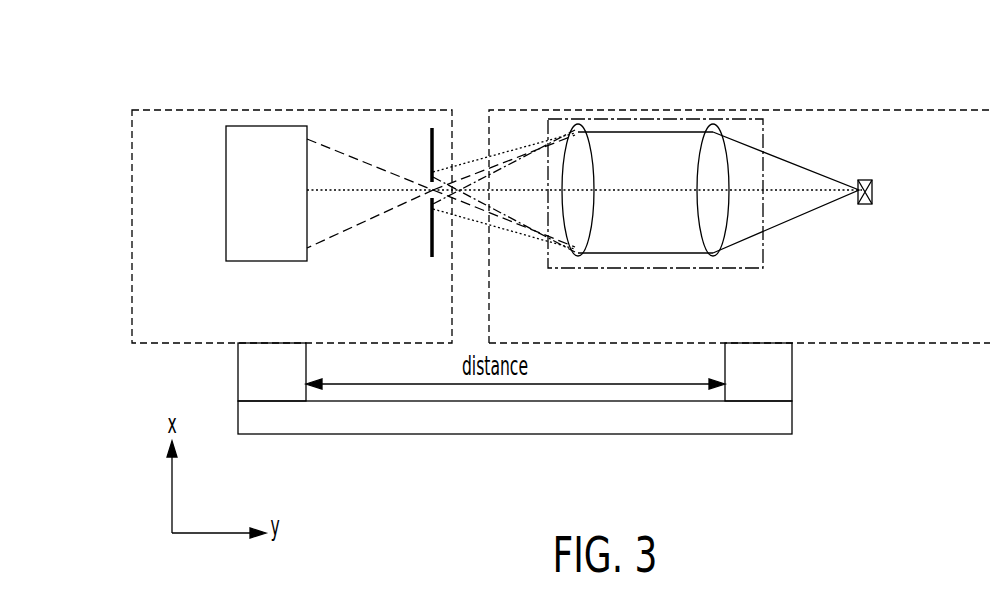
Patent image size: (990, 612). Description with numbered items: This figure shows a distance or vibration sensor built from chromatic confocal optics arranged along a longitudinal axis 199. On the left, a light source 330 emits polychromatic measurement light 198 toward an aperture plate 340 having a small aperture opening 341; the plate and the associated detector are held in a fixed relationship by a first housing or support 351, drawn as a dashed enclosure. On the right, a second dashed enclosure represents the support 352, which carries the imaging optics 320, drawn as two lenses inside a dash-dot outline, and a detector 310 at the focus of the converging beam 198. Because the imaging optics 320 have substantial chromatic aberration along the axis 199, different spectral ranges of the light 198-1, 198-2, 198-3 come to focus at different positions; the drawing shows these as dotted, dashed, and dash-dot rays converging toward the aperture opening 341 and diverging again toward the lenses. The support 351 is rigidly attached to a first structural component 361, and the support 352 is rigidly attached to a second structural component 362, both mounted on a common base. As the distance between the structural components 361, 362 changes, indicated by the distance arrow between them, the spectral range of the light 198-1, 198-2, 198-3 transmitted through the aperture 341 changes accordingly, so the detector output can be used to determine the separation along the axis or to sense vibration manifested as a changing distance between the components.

The polychromatic measurement light 198 is at (792, 163).
The first spectral range of light 198-1 is at (482, 156).
The second spectral range of light 198-2 is at (344, 156).
The third spectral range of light 198-3 is at (528, 232).
The longitudinal axis 199 is at (353, 192).
The detector 310 is at (873, 186).
The lens assembly 320 is at (625, 118).
The light source 330 is at (271, 126).
The aperture plate 340 is at (430, 175).
The aperture opening 341 is at (424, 208).
The support 351 is at (402, 110).
The support 352 is at (770, 110).
The first structural component 361 is at (248, 368).
The second structural component 362 is at (775, 372).